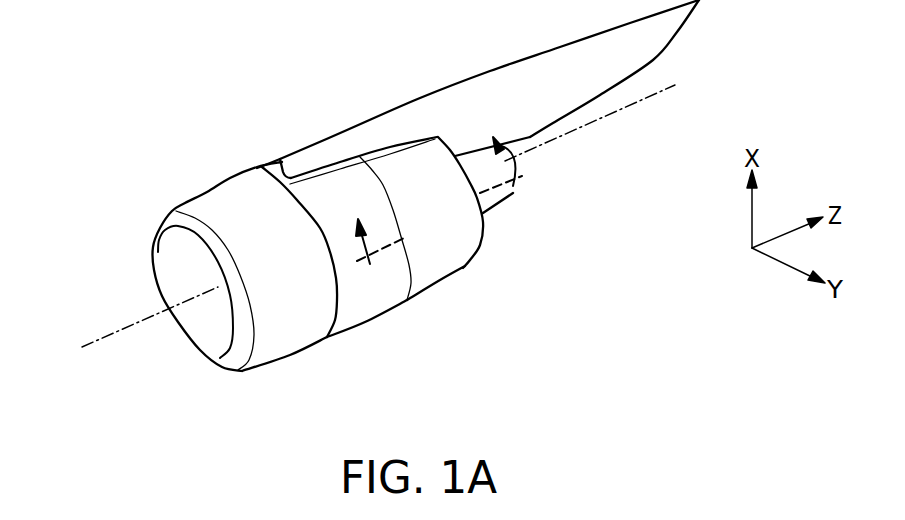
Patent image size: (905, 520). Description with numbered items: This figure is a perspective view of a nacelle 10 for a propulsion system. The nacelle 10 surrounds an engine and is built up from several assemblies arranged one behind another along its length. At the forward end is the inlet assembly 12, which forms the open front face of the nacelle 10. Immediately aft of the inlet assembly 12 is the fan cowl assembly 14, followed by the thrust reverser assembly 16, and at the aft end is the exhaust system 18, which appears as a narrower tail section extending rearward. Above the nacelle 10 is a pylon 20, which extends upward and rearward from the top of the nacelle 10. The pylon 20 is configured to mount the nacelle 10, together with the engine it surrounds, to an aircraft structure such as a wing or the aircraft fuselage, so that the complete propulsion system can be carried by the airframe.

The nacelle 10 is at (382, 208).
The inlet assembly 12 is at (288, 338).
The fan cowl assembly 14 is at (377, 292).
The thrust reverser assembly 16 is at (445, 242).
The exhaust system 18 is at (488, 207).
The pylon 20 is at (577, 80).